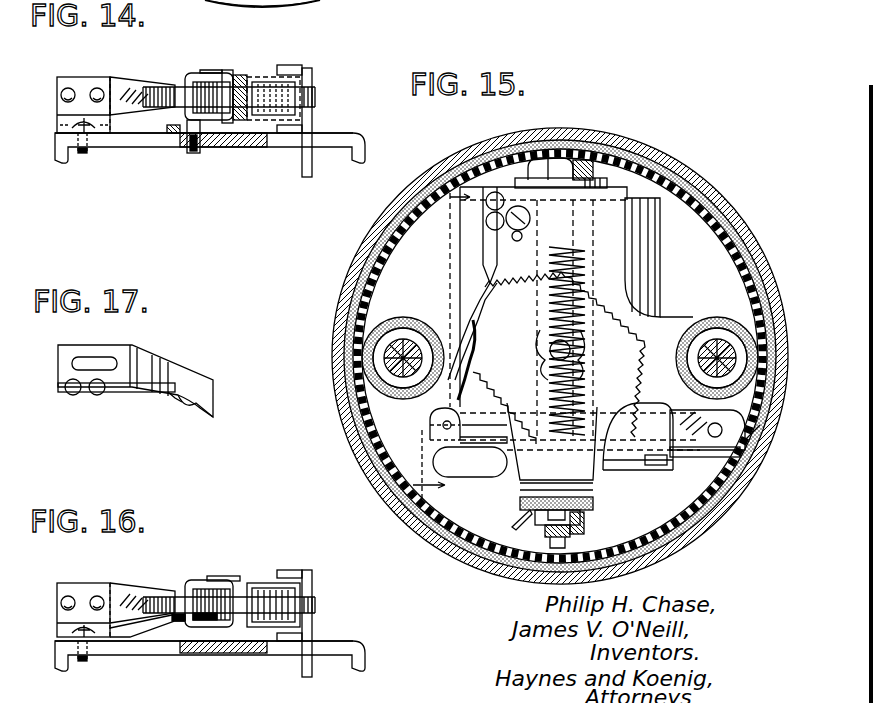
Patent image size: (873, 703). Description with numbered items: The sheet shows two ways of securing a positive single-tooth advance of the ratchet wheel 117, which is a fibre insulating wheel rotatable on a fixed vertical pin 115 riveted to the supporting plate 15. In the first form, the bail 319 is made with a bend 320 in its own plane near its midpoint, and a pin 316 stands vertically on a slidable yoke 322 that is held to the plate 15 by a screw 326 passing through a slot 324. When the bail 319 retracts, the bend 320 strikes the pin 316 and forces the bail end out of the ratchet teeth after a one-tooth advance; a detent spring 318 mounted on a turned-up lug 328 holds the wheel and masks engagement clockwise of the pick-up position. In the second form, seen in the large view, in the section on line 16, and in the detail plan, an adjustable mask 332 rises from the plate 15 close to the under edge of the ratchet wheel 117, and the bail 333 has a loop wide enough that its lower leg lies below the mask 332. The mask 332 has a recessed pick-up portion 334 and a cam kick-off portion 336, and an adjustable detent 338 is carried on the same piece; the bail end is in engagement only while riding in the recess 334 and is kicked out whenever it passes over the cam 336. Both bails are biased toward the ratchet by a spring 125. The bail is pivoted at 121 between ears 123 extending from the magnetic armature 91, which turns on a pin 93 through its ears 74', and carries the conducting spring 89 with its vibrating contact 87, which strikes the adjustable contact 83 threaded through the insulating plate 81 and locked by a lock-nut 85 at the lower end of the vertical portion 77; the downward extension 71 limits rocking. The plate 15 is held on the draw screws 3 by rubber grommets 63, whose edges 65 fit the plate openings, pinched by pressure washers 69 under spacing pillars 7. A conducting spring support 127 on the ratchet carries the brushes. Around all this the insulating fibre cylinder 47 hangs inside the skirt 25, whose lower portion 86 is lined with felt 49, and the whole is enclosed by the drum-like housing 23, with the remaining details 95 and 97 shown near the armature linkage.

In FIG. 15, the draw screws 3 is at (390, 345).
In FIG. 15, the spacing pillar 7 is at (396, 372).
In FIG. 14, the plate 15 is at (108, 143).
In FIG. 16, the plate 15 is at (135, 653).
In FIG. 15, the plate 15 is at (617, 232).
In FIG. 15, the section line 16 is at (441, 349).
In FIG. 15, the drum 23 is at (352, 226).
In FIG. 15, the skirt 25 is at (345, 412).
In FIG. 15, the insulating fibre cylinder 47 is at (362, 273).
In FIG. 15, the felt lining 49 is at (372, 472).
In FIG. 15, the rubber grommets 63 is at (345, 363).
In FIG. 15, the grommet edges 65 is at (365, 352).
In FIG. 15, the pressure washers 69 is at (350, 316).
In FIG. 15, the downward extension 71 is at (690, 452).
In FIG. 15, the ears 74' is at (659, 468).
In FIG. 15, the second vertical portion 77 is at (604, 470).
In FIG. 15, the insulating plate 81 is at (595, 440).
In FIG. 15, the adjustable contact 83 is at (548, 544).
In FIG. 15, the lock-nut 85 is at (515, 528).
In FIG. 15, the lower portion of skirt 86 is at (393, 500).
In FIG. 15, the vibrating contact 87 is at (608, 470).
In FIG. 15, the conducting spring 89 is at (505, 478).
In FIG. 14, the magnetic armature 91 is at (310, 155).
In FIG. 16, the magnetic armature 91 is at (310, 665).
In FIG. 15, the magnetic armature 91 is at (470, 462).
In FIG. 15, the pin 93 is at (748, 452).
In FIG. 15, the link 95 is at (606, 462).
In FIG. 15, the pin 97 is at (606, 455).
In FIG. 14, the fixed vertical pin 115 is at (215, 71).
In FIG. 16, the fixed vertical pin 115 is at (230, 578).
In FIG. 15, the fixed vertical pin 115 is at (580, 337).
In FIG. 14, the ratchet wheel 117 is at (318, 97).
In FIG. 16, the ratchet wheel 117 is at (318, 605).
In FIG. 15, the ratchet wheel 117 is at (625, 292).
In FIG. 14, the pivot 121 is at (290, 68).
In FIG. 16, the pivot 121 is at (290, 572).
In FIG. 15, the pivot 121 is at (456, 424).
In FIG. 14, the ears 123 is at (285, 65).
In FIG. 16, the ears 123 is at (280, 570).
In FIG. 15, the ears 123 is at (440, 434).
In FIG. 15, the spring 125 is at (440, 412).
In FIG. 15, the conducting spring support 127 is at (595, 378).
In FIG. 14, the pin 316 is at (228, 70).
In FIG. 14, the detent spring 318 is at (118, 80).
In FIG. 14, the bail 319 is at (193, 77).
In FIG. 14, the bend 320 is at (241, 75).
In FIG. 14, the slidable yoke 322 is at (165, 132).
In FIG. 14, the slot 324 is at (200, 140).
In FIG. 14, the screw 326 is at (193, 153).
In FIG. 14, the turned-up lug 328 is at (58, 118).
In FIG. 17, the adjustable mask 332 is at (160, 394).
In FIG. 16, the adjustable mask 332 is at (172, 622).
In FIG. 15, the adjustable mask 332 is at (484, 290).
In FIG. 16, the bail 333 is at (193, 582).
In FIG. 15, the bail 333 is at (498, 362).
In FIG. 17, the recessed pick-up portion 334 is at (180, 400).
In FIG. 16, the recessed pick-up portion 334 is at (188, 622).
In FIG. 15, the recessed pick-up portion 334 is at (480, 302).
In FIG. 17, the cam kick-off portion 336 is at (193, 412).
In FIG. 16, the cam kick-off portion 336 is at (213, 620).
In FIG. 15, the cam kick-off portion 336 is at (474, 322).
In FIG. 17, the adjustable detent 338 is at (118, 394).
In FIG. 16, the adjustable detent 338 is at (120, 590).
In FIG. 15, the adjustable detent 338 is at (482, 248).